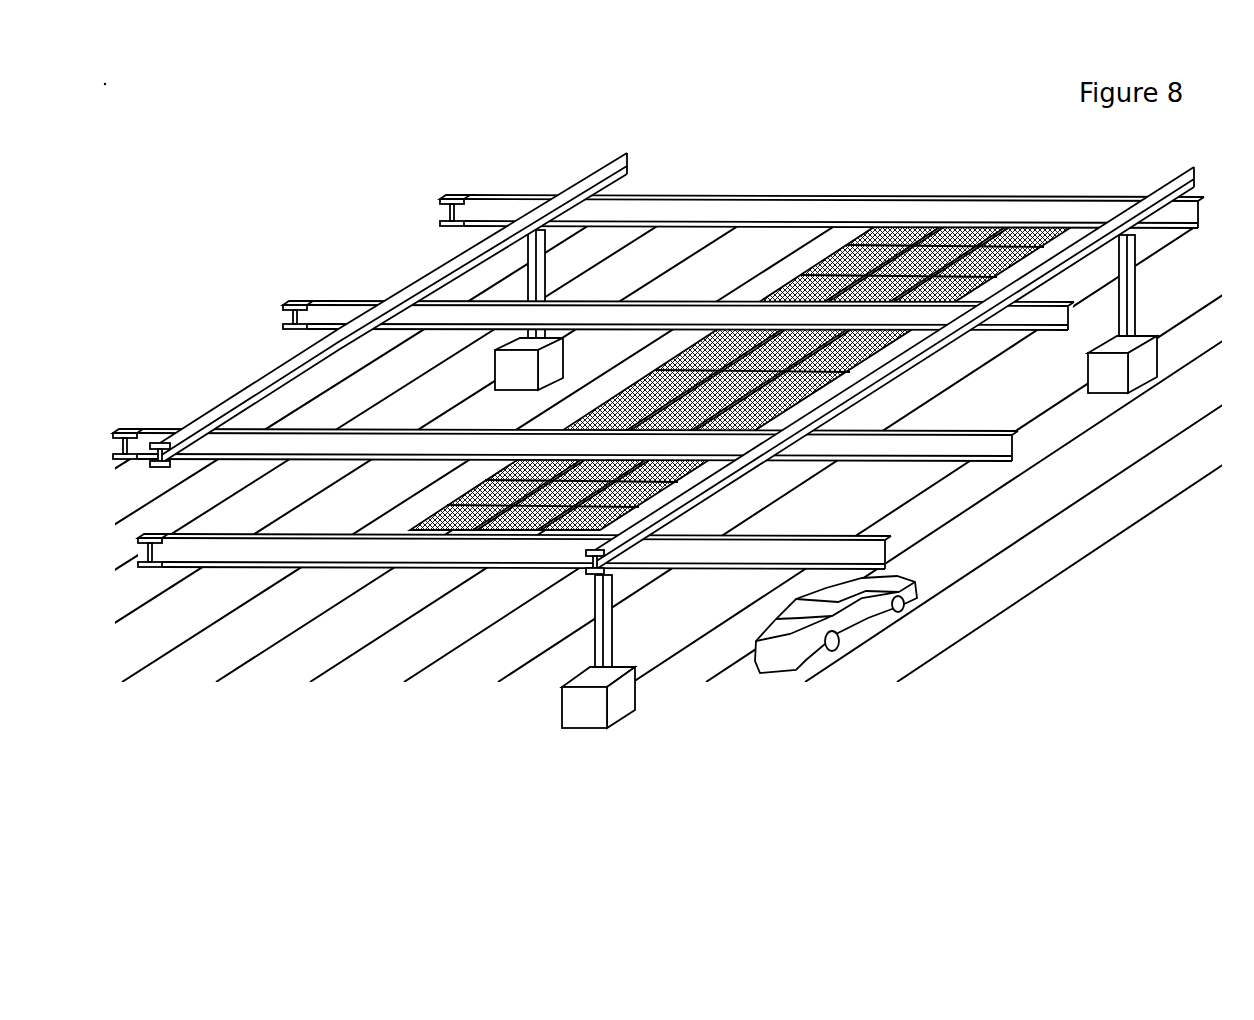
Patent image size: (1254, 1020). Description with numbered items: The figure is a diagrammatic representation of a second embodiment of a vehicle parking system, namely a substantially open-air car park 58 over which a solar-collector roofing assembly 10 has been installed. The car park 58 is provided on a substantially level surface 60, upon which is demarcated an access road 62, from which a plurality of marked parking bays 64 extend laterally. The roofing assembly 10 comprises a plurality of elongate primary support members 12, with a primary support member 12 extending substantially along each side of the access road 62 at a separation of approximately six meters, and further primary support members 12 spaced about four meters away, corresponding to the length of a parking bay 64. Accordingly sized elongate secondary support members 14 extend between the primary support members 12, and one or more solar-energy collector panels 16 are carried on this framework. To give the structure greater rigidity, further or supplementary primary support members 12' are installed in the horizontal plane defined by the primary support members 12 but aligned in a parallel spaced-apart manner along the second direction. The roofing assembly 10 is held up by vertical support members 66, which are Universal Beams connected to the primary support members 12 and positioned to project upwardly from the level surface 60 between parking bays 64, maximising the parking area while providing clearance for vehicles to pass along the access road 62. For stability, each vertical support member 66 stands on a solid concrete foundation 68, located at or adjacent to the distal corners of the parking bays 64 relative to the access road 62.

The solar-collector roofing assembly 10 is at (754, 323).
The primary support member 12 is at (658, 382).
The further primary support member 12' is at (678, 337).
The secondary support member 14 is at (700, 418).
The solar-energy collector panel 16 is at (887, 277).
The car park 58 is at (660, 446).
The level surface 60 is at (627, 457).
The access road 62 is at (1040, 507).
The parking bay 64 is at (222, 640).
The vertical support member 66 is at (318, 320).
The concrete foundation 68 is at (1140, 373).